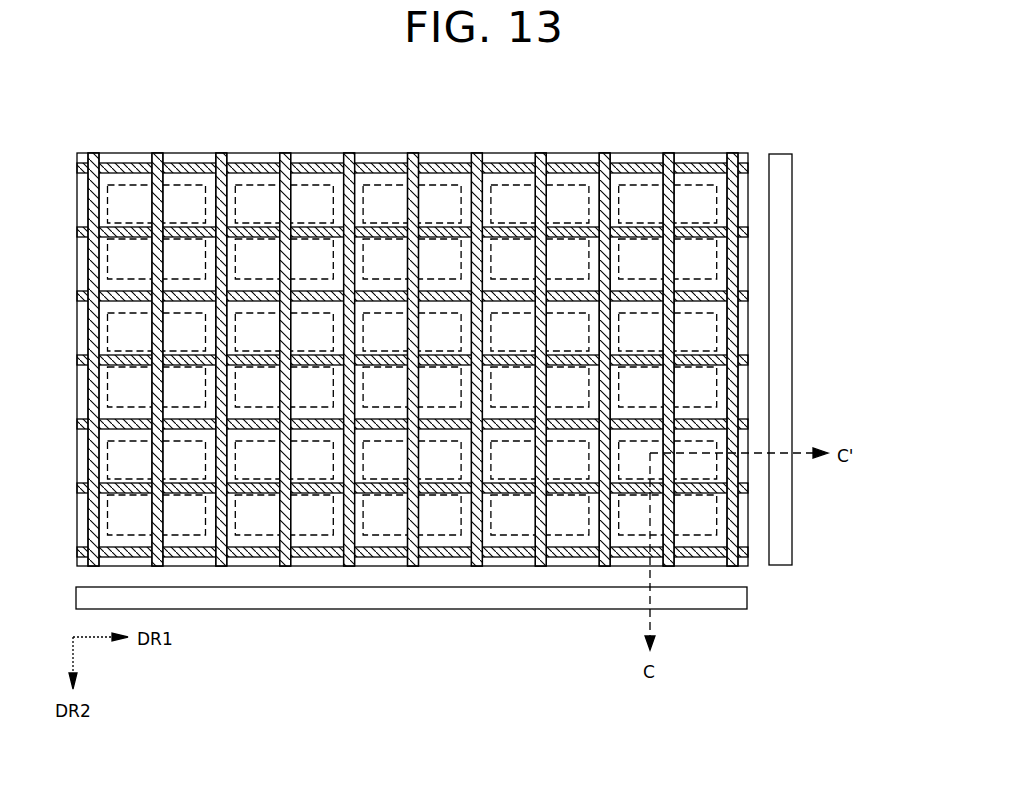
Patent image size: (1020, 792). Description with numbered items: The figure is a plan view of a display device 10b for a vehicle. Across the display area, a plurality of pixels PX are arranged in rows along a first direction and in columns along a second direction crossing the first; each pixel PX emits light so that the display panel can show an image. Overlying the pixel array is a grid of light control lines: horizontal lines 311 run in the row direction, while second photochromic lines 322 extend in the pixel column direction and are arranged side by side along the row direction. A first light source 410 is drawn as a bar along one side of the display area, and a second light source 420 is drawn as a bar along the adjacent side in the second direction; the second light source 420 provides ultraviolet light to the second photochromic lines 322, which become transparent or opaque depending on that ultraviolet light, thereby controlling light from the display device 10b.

The display device for a vehicle 10b is at (459, 340).
The pixel PX is at (185, 186).
The first light blocking pattern (horizontal) 311 is at (254, 168).
The second photochromic line 322 is at (90, 259).
The first light source 410 is at (781, 155).
The second light source 420 is at (747, 594).